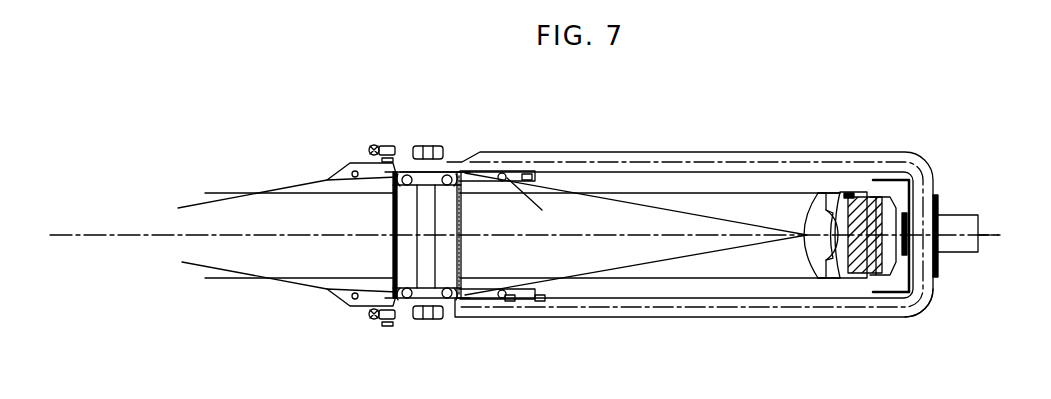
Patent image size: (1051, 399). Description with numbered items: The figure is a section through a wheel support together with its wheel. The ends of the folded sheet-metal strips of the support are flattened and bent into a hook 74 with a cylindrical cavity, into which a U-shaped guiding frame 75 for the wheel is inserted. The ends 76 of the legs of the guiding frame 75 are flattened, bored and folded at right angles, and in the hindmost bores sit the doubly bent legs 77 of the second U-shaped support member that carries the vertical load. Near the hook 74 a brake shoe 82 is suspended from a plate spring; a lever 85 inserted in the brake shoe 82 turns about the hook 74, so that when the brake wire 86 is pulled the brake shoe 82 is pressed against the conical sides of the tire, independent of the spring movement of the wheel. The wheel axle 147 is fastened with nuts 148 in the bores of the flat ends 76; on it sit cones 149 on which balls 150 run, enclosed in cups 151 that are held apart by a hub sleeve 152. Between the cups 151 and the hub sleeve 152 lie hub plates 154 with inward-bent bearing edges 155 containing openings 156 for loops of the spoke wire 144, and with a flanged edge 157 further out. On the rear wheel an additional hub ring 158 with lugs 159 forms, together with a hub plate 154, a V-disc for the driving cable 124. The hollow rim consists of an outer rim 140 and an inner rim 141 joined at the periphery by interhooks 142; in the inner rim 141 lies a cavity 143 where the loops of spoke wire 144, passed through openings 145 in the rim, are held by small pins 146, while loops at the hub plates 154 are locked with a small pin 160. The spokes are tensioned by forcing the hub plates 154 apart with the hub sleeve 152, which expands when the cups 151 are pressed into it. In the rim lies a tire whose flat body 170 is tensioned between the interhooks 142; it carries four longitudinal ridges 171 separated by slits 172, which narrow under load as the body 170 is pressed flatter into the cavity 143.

The hook 74 is at (936, 197).
The guiding frame 75 is at (650, 152).
The ends of the legs of the guiding frame 76 is at (382, 140).
The doubly bent legs 77 is at (366, 150).
The brake shoe 82 is at (927, 307).
The lever 85 is at (948, 245).
The brake wire 86 is at (968, 235).
The driving cable 124 is at (350, 307).
The outer rim 140 is at (818, 200).
The inner rim 141 is at (830, 203).
The interhooks 142 is at (850, 196).
The cavity 143 is at (827, 245).
The spoke wire 144 is at (687, 262).
The openings 145 is at (805, 232).
The small pins 146 is at (808, 245).
The wheel axle 147 is at (423, 252).
The nuts 148 is at (415, 147).
The cones 149 is at (423, 180).
The balls 150 is at (447, 177).
The cups 151 is at (395, 192).
The hub sleeve 152 is at (397, 225).
The hub plates 154 is at (345, 160).
The bearing edges 155 is at (350, 165).
The openings 156 is at (542, 210).
The flanged edge 157 is at (528, 174).
The hub ring 158 is at (508, 301).
The lugs 159 is at (487, 291).
The small pin 160 is at (501, 173).
The body 170 is at (854, 278).
The longitudinal ridges 171 is at (884, 214).
The slits 172 is at (900, 226).